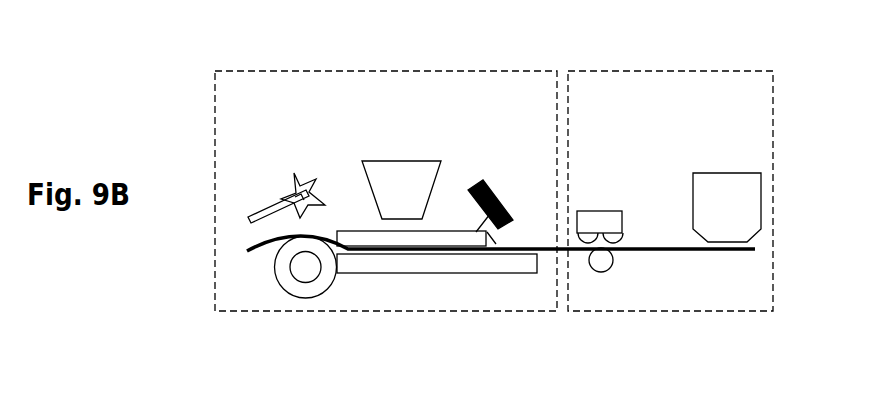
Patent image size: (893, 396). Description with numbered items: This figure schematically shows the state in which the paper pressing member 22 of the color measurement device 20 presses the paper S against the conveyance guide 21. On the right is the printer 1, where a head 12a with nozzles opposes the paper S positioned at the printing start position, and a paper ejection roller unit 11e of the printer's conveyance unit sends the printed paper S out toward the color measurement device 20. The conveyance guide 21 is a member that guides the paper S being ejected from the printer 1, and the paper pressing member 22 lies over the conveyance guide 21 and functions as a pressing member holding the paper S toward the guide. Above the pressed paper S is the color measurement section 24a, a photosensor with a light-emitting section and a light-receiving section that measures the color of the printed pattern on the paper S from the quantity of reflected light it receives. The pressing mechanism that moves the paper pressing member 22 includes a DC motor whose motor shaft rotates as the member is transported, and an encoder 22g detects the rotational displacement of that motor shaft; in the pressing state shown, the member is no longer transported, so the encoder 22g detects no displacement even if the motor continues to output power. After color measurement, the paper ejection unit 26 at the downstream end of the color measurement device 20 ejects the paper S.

The printer 1 is at (660, 71).
The color measurement device 20 is at (400, 71).
The paper S is at (253, 236).
The paper ejection unit 26 is at (308, 312).
The color measurement section 24a is at (402, 170).
The paper pressing member 22 is at (447, 237).
The conveyance guide 21 is at (450, 265).
The encoder 22g is at (500, 193).
The paper ejection roller unit 11e is at (632, 229).
The head 12a is at (743, 200).